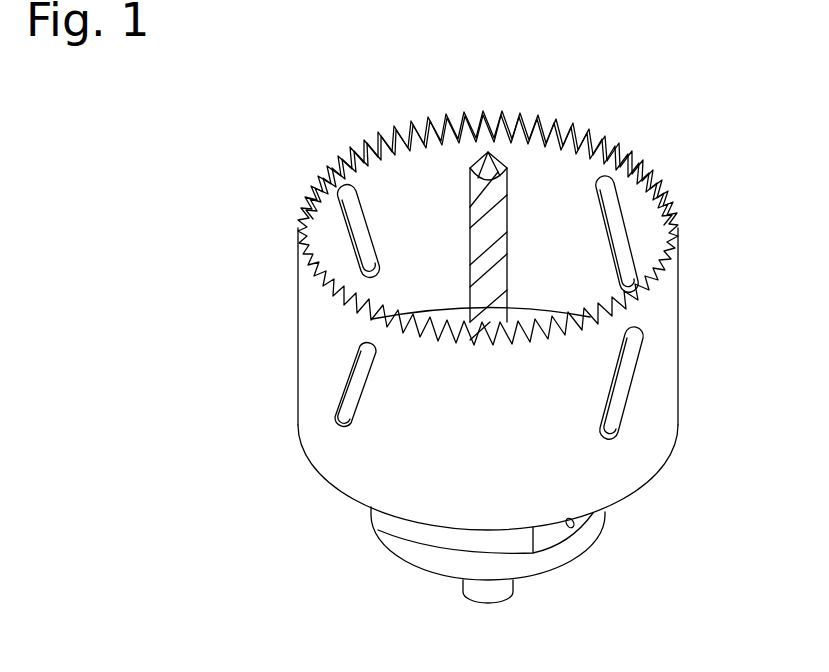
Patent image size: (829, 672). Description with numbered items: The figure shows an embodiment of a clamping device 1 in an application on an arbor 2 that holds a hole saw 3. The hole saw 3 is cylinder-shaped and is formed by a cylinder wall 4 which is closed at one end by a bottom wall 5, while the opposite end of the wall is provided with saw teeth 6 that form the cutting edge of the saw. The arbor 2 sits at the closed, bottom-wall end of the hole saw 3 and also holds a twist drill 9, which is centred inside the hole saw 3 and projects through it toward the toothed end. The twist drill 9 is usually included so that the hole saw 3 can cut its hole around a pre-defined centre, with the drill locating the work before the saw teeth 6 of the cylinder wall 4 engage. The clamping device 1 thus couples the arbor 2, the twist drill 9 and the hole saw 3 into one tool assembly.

The clamping device 1 is at (497, 352).
The arbor 2 is at (472, 603).
The hole saw 3 is at (678, 295).
The cylinder wall 4 is at (633, 404).
The bottom wall 5 is at (455, 318).
The saw teeth 6 is at (646, 163).
The twist drill 9 is at (498, 207).